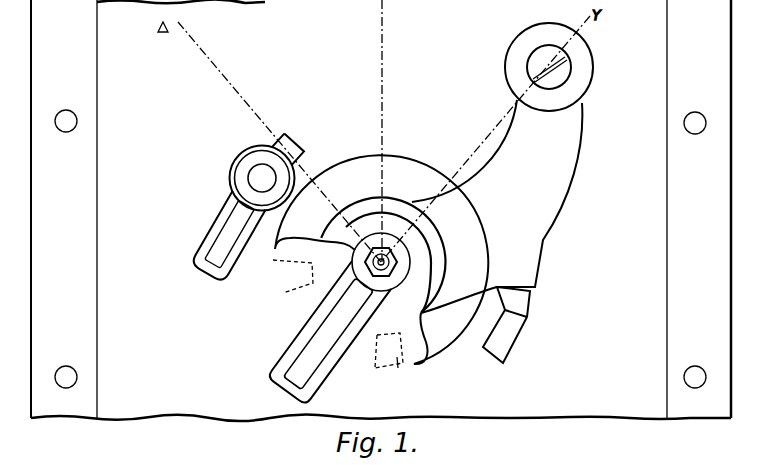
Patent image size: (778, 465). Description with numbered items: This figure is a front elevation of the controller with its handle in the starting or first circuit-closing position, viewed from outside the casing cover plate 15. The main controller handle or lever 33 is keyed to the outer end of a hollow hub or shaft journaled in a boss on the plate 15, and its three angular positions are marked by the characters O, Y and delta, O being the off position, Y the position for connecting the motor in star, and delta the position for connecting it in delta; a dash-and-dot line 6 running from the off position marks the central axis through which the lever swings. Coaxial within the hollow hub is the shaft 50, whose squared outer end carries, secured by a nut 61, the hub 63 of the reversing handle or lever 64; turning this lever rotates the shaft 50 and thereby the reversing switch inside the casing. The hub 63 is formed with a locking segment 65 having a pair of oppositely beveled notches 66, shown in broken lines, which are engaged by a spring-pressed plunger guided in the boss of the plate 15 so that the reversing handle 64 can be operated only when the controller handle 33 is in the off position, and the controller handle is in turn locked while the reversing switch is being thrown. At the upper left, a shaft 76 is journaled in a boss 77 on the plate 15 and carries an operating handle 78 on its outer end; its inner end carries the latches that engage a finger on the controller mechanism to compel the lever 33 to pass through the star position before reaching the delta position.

The axis line 6 is at (388, 131).
The casing cover plate 15 is at (145, 402).
The main controller handle 33 is at (549, 190).
The shaft 50 is at (402, 260).
The nut 61 is at (372, 262).
The hub 63 is at (368, 225).
The reversing handle 64 is at (292, 345).
The locking segment 65 is at (297, 307).
The beveled notches 66 is at (283, 275).
The shaft 76 is at (261, 172).
The boss 77 is at (236, 176).
The operating handle 78 is at (216, 232).